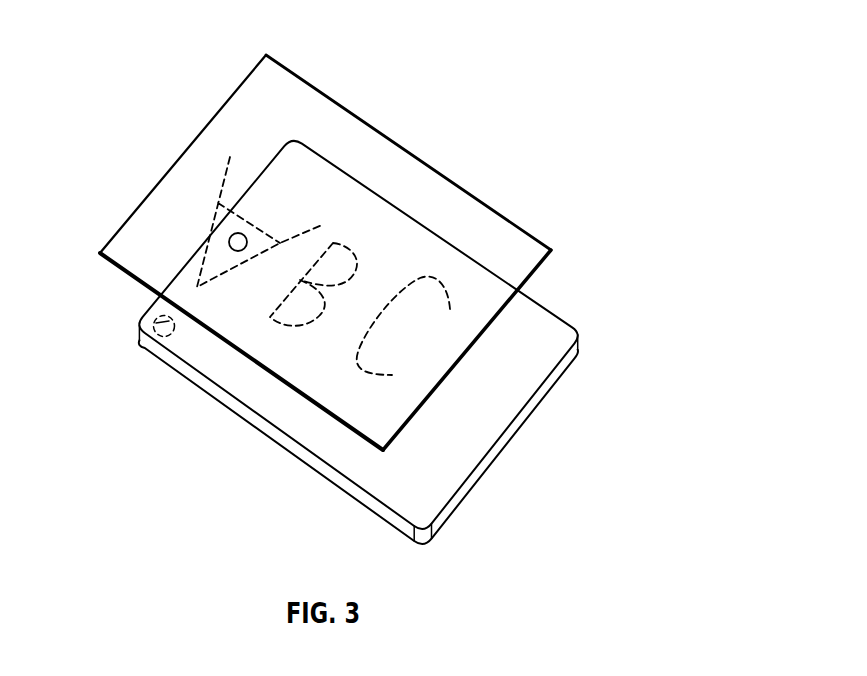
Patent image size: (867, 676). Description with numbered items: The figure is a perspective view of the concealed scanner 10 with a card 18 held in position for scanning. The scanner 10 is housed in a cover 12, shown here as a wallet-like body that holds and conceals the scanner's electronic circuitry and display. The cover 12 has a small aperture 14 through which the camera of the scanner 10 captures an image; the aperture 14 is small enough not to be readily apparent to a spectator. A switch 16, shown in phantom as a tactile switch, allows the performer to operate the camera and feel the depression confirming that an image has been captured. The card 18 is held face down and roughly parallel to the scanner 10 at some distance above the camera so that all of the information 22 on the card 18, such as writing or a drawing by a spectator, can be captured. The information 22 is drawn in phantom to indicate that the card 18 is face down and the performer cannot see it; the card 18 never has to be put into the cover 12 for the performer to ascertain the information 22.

The concealed scanner 10 is at (334, 299).
The cover 12 is at (367, 483).
The aperture 14 is at (238, 242).
The switch 16 is at (160, 322).
The card 18 is at (464, 190).
The information 22 is at (352, 205).